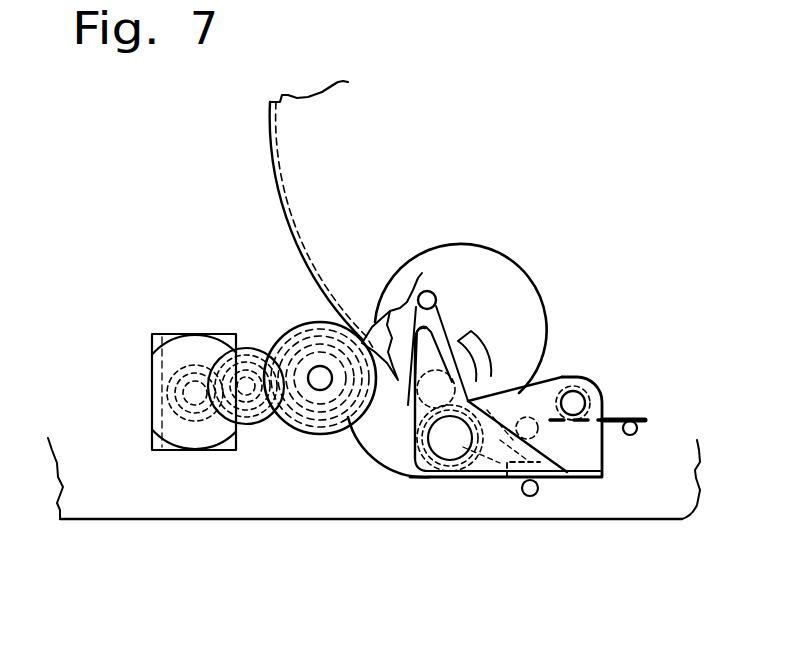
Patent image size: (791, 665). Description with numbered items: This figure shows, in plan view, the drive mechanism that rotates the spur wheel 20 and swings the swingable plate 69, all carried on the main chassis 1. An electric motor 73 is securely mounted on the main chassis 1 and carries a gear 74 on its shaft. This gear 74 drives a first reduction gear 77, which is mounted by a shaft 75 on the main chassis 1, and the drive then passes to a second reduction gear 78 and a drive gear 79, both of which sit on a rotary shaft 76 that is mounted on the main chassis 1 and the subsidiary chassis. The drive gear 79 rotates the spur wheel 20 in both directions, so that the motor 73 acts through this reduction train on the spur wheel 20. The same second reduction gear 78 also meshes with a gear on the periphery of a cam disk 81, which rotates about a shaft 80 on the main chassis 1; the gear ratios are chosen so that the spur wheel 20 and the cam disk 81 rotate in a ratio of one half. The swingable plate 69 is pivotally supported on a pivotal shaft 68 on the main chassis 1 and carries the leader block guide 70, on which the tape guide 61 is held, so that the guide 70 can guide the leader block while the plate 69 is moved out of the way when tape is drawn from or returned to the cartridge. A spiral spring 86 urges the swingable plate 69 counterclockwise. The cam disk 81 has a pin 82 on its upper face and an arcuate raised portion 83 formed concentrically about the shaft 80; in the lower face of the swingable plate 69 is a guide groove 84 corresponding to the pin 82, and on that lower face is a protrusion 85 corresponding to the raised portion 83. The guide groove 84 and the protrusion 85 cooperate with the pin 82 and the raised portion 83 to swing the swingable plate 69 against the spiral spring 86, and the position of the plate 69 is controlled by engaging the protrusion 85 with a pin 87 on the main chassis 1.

The main chassis 1 is at (80, 500).
The spur wheel 20 is at (304, 160).
The tape guide 61 is at (448, 446).
The pivotal shaft 68 is at (573, 402).
The swingable plate 69 is at (585, 468).
The leader block guide 70 is at (392, 314).
The electric motor 73 is at (175, 433).
The gear 74 is at (195, 395).
The shaft 75 is at (247, 388).
The rotary shaft 76 is at (320, 390).
The first reduction gear 77 is at (260, 424).
The second reduction gear 78 is at (340, 425).
The drive gear 79 is at (288, 333).
The shaft 80 is at (494, 316).
The cam disk 81 is at (453, 315).
The pin 82 is at (431, 292).
The arcuate raised portion 83 is at (486, 366).
The guide groove 84 is at (480, 440).
The protrusion 85 is at (510, 468).
The spiral spring 86 is at (622, 420).
The pin 87 is at (530, 496).